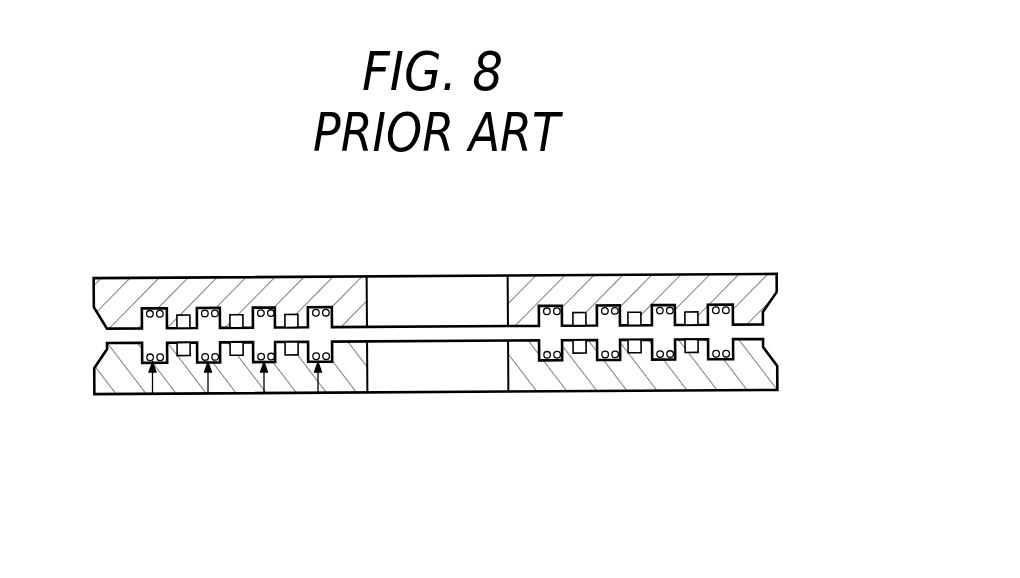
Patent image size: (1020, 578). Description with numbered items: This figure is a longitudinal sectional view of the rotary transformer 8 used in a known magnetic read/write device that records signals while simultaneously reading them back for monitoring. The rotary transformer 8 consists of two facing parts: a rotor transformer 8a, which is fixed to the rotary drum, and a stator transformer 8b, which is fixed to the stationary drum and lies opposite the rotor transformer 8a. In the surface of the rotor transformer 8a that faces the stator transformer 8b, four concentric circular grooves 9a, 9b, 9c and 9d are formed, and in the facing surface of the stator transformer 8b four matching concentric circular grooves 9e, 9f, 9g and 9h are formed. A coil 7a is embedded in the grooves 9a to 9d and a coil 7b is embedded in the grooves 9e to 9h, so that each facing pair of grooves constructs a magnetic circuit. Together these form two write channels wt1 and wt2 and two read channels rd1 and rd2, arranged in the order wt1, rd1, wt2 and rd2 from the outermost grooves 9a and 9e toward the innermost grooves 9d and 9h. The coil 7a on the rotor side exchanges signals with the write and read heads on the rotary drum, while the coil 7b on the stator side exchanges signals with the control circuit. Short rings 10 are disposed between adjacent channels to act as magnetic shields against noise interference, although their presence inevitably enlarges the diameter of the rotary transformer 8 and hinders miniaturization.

The rotary transformer 8 is at (506, 319).
The rotor transformer 8a is at (778, 277).
The stator transformer 8b is at (780, 373).
The coil 7a is at (553, 314).
The coil 7b is at (720, 350).
The concentric circular groove 9a is at (152, 307).
The concentric circular groove 9b is at (208, 307).
The concentric circular groove 9c is at (260, 307).
The concentric circular groove 9d is at (318, 307).
The concentric circular groove 9e is at (147, 359).
The concentric circular groove 9f is at (205, 359).
The concentric circular groove 9g is at (258, 359).
The concentric circular groove 9h is at (328, 359).
The short ring 10 is at (580, 313).
The write channel wt1 is at (152, 393).
The read channel rd1 is at (208, 393).
The write channel wt2 is at (264, 393).
The read channel rd2 is at (318, 393).